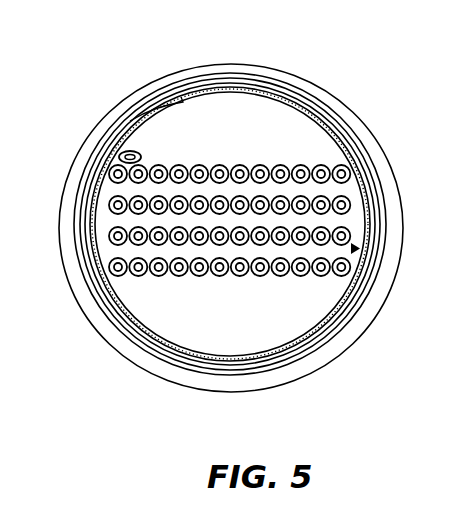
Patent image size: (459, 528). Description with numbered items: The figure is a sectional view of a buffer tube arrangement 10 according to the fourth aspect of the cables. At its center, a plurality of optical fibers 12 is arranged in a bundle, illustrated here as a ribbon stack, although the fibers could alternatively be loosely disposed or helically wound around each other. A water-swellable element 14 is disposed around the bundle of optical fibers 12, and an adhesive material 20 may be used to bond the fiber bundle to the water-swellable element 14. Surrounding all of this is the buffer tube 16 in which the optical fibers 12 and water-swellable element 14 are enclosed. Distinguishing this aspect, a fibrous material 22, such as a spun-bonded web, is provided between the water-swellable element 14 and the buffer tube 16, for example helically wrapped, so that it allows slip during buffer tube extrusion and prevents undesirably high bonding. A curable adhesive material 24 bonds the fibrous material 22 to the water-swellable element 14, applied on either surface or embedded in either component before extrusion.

The buffer tube arrangement 10 is at (92, 72).
The optical fibers 12 is at (141, 280).
The water-swellable element 14 is at (97, 183).
The buffer tube 16 is at (178, 388).
The adhesive material 20 is at (122, 147).
The fibrous material 22 is at (156, 347).
The curable adhesive material 24 is at (247, 82).